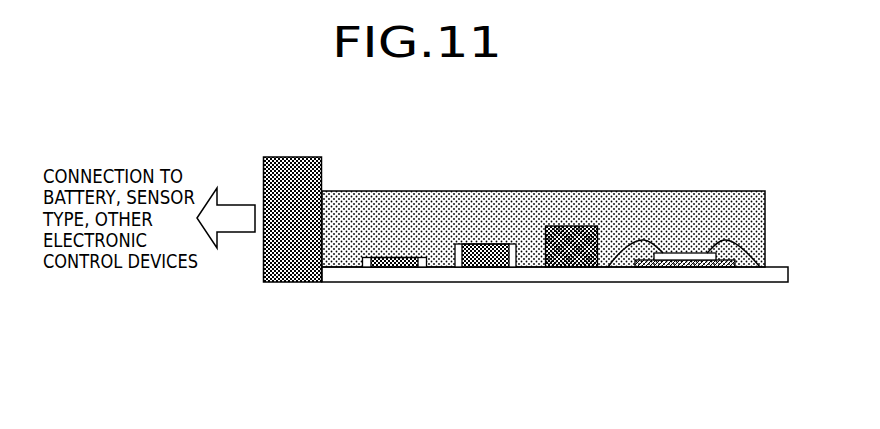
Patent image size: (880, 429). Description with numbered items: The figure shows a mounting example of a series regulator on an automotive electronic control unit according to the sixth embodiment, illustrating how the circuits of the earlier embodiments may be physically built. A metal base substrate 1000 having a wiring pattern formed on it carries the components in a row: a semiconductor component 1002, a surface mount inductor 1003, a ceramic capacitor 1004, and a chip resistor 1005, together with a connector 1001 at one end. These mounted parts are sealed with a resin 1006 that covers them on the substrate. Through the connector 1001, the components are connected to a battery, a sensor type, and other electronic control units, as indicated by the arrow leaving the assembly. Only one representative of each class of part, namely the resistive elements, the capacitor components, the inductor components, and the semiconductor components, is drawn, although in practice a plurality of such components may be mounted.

The metal base substrate 1000 is at (540, 282).
The connector 1001 is at (292, 282).
The semiconductor component 1002 is at (675, 253).
The surface mount inductor 1003 is at (572, 226).
The ceramic capacitor 1004 is at (487, 244).
The chip resistor 1005 is at (393, 257).
The resin 1006 is at (357, 191).